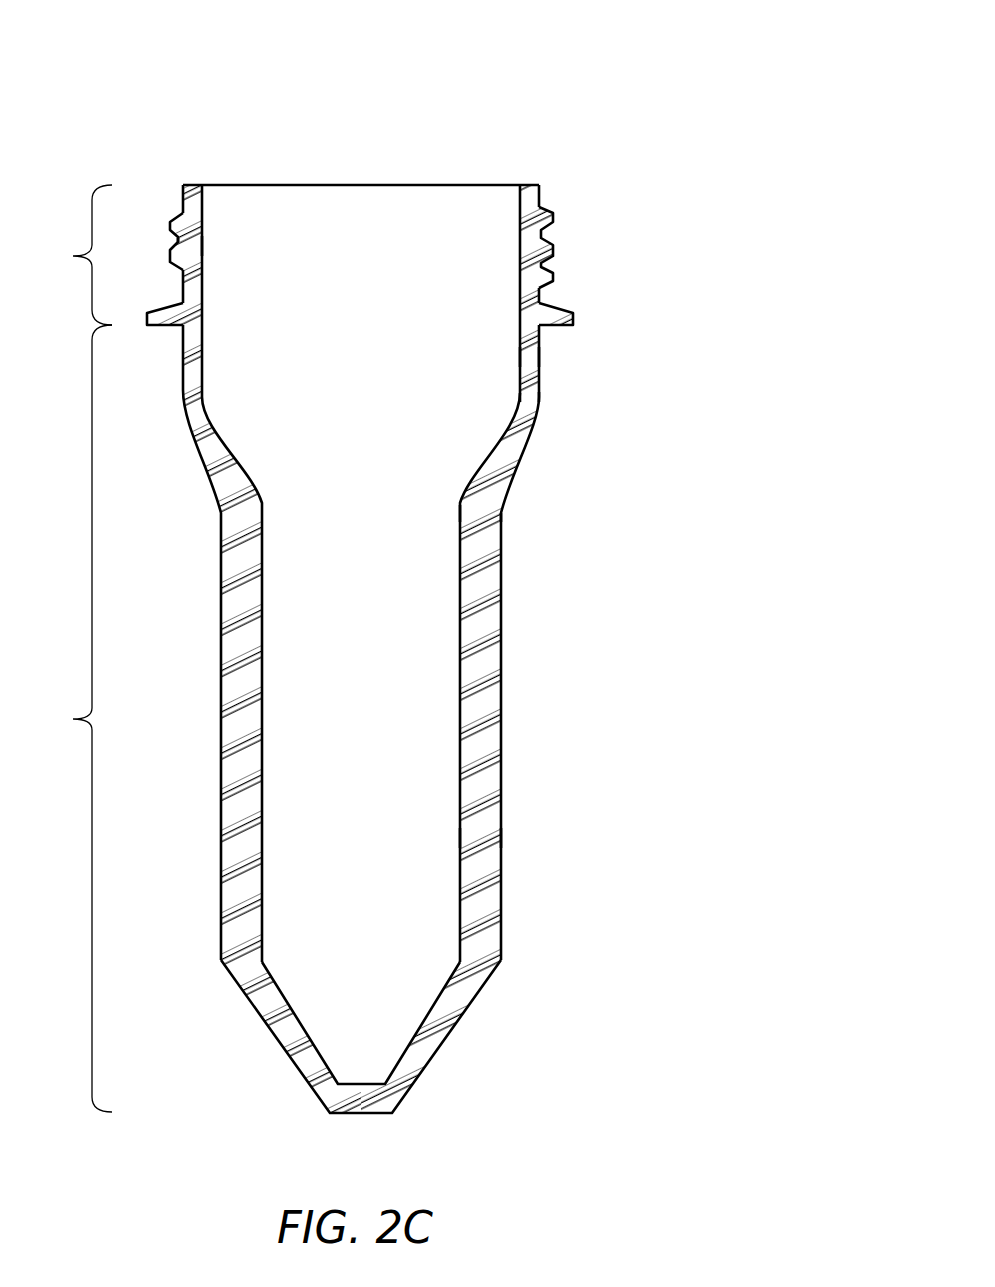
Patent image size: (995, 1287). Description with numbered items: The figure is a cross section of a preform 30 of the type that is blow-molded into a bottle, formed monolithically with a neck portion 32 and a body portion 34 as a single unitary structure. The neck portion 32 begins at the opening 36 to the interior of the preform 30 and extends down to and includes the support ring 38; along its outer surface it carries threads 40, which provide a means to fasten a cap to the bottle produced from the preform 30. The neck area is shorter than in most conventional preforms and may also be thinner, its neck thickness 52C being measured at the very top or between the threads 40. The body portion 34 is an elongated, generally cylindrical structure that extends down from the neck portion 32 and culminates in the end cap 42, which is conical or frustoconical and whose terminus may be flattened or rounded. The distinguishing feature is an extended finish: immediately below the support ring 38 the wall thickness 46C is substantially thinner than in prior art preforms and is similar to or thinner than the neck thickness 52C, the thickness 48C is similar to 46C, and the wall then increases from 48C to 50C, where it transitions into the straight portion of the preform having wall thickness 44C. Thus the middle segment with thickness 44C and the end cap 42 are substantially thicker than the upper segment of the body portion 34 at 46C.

The preform 30 is at (590, 118).
The neck portion 32 is at (80, 255).
The body portion 34 is at (80, 718).
The opening 36 is at (391, 185).
The support ring 38 is at (575, 311).
The threads 40 is at (553, 244).
The end cap 42 is at (364, 1124).
The wall thickness of the straight portion of the body 44C is at (425, 838).
The wall thickness of the upper segment of the body portion 46C is at (486, 357).
The wall thickness at the upper transition point 48C is at (478, 402).
The wall thickness at the lower transition point 50C is at (430, 512).
The neck portion thickness 52C is at (148, 246).